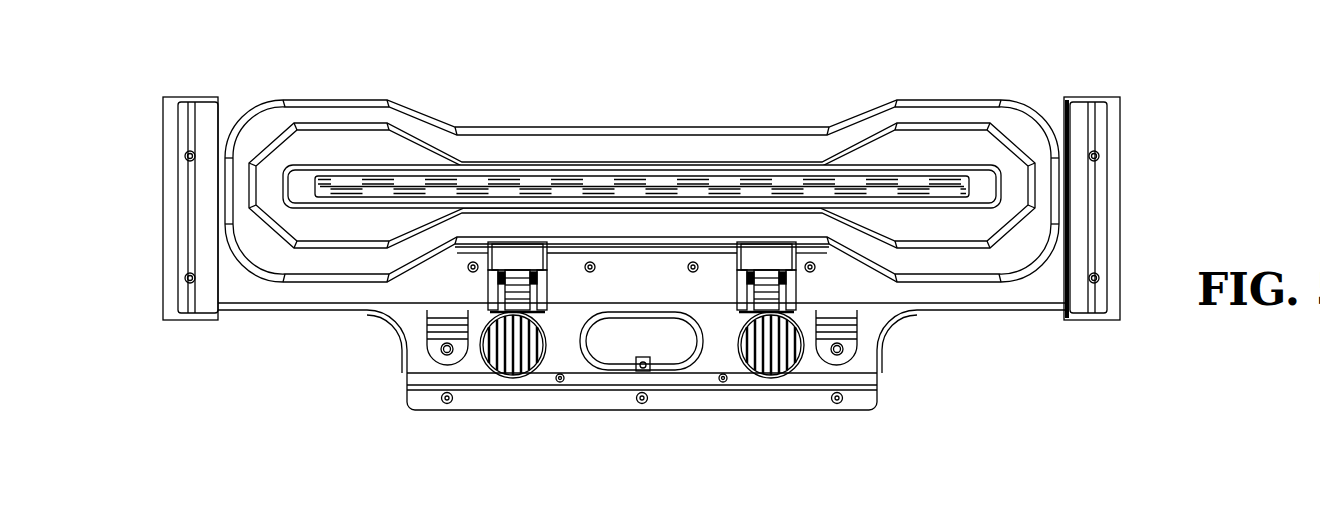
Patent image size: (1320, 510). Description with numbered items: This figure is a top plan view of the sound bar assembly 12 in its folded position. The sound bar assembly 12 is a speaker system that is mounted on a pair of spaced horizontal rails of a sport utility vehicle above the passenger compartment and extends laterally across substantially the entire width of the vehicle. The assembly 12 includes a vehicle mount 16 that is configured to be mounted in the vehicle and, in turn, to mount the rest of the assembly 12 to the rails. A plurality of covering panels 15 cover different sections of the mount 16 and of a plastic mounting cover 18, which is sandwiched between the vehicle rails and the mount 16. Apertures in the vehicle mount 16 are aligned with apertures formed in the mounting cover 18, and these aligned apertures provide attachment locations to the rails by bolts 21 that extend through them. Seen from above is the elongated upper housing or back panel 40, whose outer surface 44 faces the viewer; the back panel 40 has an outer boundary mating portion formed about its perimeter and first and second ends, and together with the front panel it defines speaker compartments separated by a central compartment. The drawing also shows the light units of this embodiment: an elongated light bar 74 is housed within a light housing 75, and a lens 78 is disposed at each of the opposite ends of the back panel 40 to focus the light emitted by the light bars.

The sound bar assembly 12 is at (800, 93).
The covering panels 15 is at (250, 290).
The vehicle mount 16 is at (1112, 100).
The plastic mounting cover 18 is at (1125, 213).
The bolts 21 is at (186, 160).
The back panel 40 is at (948, 100).
The outer surface 44 is at (503, 150).
The elongated light bar 74 is at (668, 177).
The light housing 75 is at (728, 167).
The lens 78 is at (338, 150).